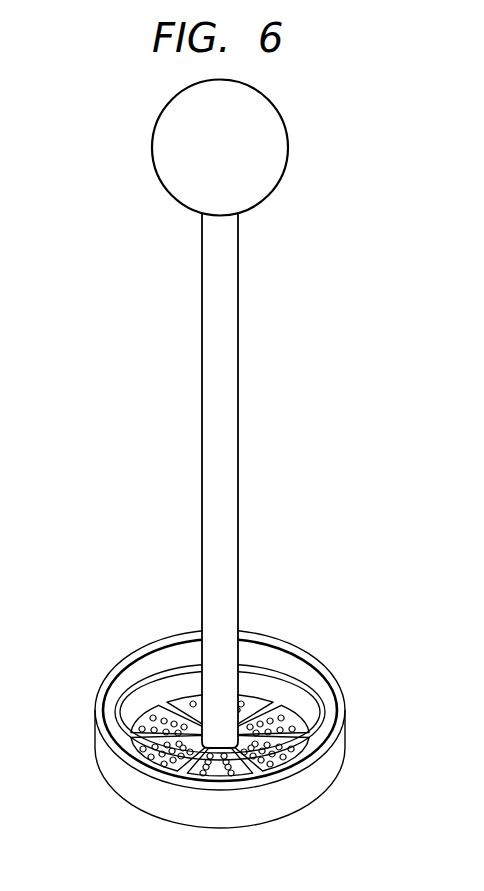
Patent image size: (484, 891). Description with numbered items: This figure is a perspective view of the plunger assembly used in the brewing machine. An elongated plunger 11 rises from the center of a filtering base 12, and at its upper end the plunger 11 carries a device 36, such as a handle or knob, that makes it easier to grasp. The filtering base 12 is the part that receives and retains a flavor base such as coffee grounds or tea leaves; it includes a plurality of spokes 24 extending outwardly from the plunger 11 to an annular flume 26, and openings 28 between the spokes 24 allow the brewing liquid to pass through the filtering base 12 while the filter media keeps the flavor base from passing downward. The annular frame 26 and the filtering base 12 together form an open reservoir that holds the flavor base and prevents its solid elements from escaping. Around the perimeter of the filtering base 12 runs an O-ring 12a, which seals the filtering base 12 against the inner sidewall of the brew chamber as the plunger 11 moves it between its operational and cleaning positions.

The plunger 11 is at (375, 88).
The filtering base 12 is at (195, 704).
The O-ring 12a is at (102, 755).
The spokes 24 is at (192, 698).
The annular flume 26 is at (162, 697).
The openings 28 is at (162, 712).
The device 36 is at (288, 124).